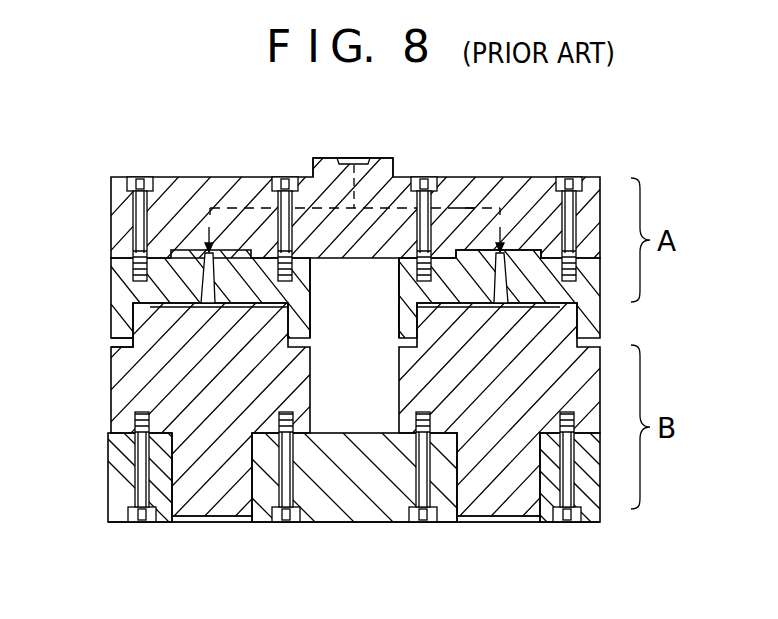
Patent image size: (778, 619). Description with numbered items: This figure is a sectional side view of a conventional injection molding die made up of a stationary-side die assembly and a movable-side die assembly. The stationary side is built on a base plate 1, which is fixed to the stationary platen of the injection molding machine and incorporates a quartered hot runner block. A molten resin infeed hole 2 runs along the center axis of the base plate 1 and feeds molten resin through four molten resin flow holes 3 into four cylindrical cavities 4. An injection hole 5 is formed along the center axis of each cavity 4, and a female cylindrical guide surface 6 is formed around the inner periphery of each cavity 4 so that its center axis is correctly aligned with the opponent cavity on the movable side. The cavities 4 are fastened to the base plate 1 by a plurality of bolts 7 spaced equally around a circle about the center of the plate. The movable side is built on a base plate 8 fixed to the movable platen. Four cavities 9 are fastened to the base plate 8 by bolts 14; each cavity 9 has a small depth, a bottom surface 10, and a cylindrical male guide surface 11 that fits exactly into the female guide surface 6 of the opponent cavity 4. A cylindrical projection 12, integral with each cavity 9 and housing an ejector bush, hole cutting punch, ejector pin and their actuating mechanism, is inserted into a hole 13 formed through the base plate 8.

The base plate 1 is at (525, 197).
The molten resin infeed hole 2 is at (356, 160).
The molten resin flow holes 3 is at (466, 208).
The cavities 4 is at (128, 291).
The injection hole 5 is at (210, 300).
The female cylindrical guide surface 6 is at (135, 317).
The bolts 7 is at (138, 179).
The base plate 8 is at (345, 506).
The cavities 9 is at (136, 398).
The bottom surface 10 is at (250, 300).
The cylindrical male guide surface 11 is at (310, 322).
The cylindrical projection 12 is at (200, 500).
The hole 13 is at (250, 483).
The bolts 14 is at (137, 468).